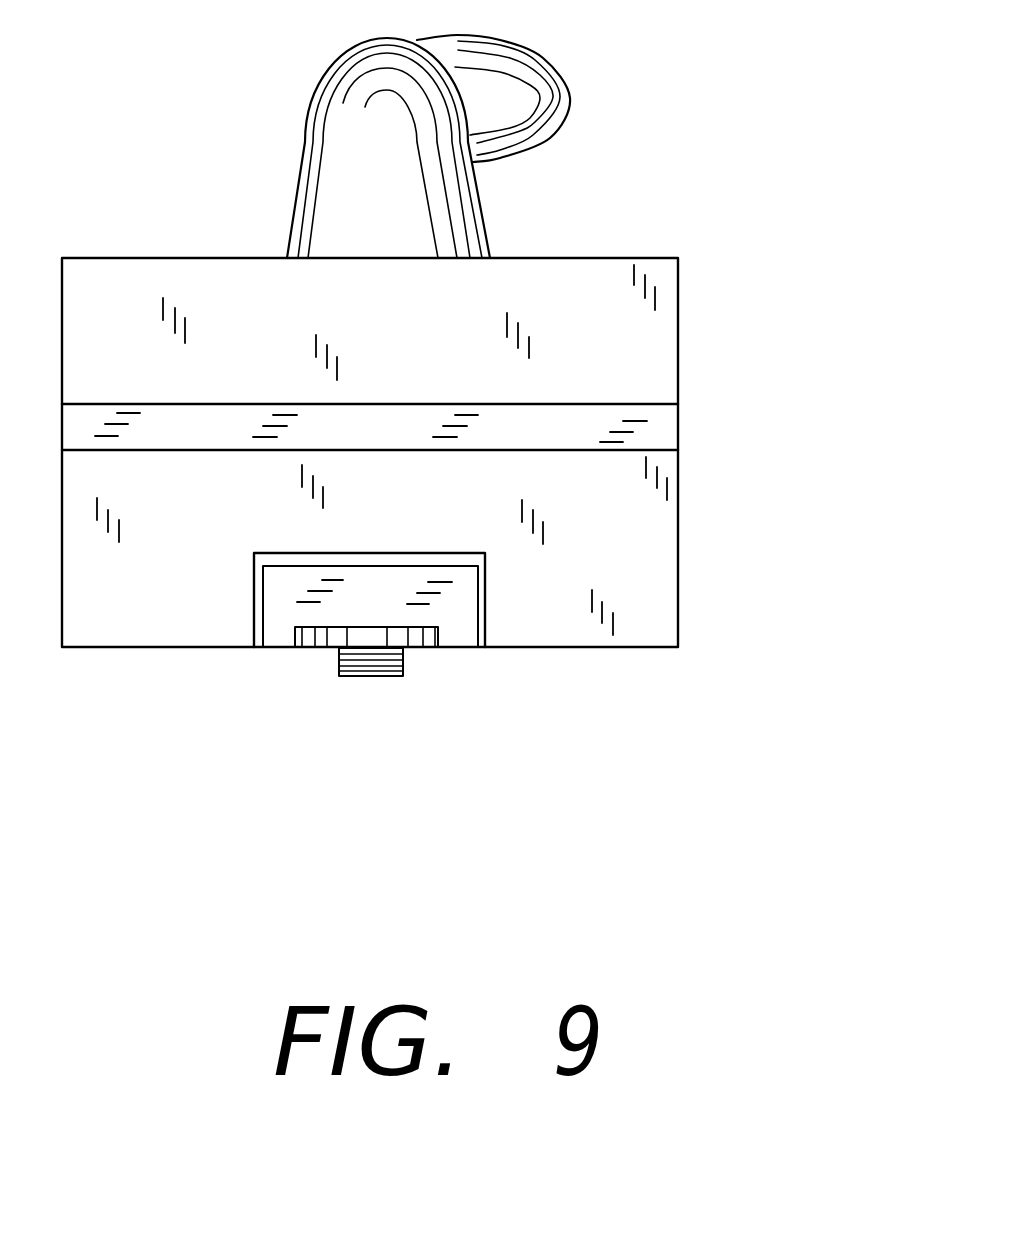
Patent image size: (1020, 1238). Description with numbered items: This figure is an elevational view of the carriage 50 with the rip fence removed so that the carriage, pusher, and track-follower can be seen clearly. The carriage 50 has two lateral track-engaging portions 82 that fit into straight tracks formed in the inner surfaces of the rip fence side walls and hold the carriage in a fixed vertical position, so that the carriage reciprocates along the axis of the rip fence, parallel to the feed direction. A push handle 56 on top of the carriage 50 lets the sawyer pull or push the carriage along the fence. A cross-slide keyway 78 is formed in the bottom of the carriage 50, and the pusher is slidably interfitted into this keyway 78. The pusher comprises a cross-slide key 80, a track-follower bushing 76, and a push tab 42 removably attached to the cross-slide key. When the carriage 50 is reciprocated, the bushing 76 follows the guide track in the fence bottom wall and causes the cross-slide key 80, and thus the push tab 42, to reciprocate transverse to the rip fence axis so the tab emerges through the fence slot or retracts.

The push tab 42 is at (427, 647).
The carriage 50 is at (622, 320).
The push handle 56 is at (535, 152).
The track-follower bushing 76 is at (360, 676).
The cross-slide keyway 78 is at (487, 558).
The cross-slide key 80 is at (280, 628).
The lateral track-engaging portions 82 is at (627, 428).